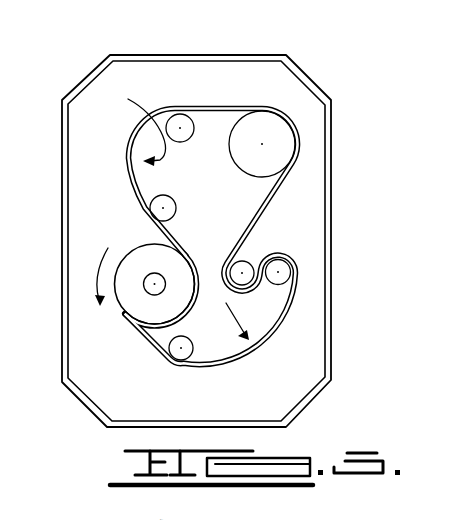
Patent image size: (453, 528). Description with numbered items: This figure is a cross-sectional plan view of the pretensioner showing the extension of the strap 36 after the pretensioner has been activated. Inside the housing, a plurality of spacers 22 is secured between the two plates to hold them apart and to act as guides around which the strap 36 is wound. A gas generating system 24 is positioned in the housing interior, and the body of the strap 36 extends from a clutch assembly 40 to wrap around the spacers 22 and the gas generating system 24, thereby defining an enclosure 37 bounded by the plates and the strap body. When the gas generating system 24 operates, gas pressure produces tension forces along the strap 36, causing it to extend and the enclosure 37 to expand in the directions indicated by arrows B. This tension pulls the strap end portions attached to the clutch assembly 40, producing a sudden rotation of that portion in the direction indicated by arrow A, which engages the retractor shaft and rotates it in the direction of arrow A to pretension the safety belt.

The spacers 22 is at (181, 118).
The gas generating system 24 is at (270, 131).
The strap 36 is at (136, 130).
The enclosure 37 is at (232, 190).
The clutch assembly 40 is at (146, 297).
The arrow A is at (97, 278).
The arrows B is at (354, 327).